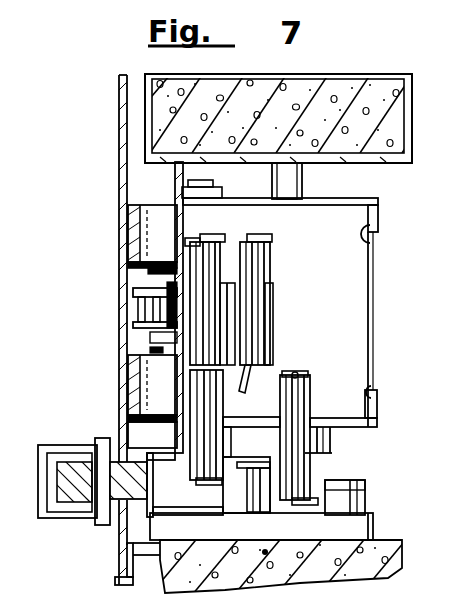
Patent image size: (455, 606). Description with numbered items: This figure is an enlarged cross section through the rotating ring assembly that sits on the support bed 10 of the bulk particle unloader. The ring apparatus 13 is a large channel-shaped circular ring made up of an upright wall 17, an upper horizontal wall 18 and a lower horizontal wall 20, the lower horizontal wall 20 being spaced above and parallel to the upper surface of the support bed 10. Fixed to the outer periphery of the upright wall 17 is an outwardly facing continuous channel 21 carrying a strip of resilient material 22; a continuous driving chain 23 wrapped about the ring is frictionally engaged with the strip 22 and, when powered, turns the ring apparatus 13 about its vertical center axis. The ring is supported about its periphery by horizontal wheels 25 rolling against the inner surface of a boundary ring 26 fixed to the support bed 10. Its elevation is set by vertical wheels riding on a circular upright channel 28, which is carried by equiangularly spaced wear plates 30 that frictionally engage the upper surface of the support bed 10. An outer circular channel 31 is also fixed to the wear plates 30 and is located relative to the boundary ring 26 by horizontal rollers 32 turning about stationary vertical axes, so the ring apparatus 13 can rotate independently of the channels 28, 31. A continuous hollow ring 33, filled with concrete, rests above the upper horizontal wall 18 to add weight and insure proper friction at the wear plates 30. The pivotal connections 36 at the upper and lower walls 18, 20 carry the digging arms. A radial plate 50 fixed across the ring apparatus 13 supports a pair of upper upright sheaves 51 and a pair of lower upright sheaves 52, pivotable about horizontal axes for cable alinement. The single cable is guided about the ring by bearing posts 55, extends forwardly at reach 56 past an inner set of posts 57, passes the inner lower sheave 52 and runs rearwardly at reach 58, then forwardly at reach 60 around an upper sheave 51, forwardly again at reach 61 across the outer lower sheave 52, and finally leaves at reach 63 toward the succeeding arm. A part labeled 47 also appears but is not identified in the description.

The support bed 10 is at (386, 540).
The ring apparatus 13 is at (380, 216).
The upright wall 17 is at (192, 238).
The upper horizontal wall 18 is at (345, 199).
The lower horizontal wall 20 is at (348, 422).
The continuous channel 21 is at (146, 271).
The strip of resilient material 22 is at (150, 349).
The driving chain 23 is at (160, 324).
The horizontal wheels 25 is at (155, 212).
The boundary ring 26 is at (117, 173).
The circular upright channel 28 is at (265, 511).
The wear plates 30 is at (361, 527).
The outer circular channel 31 is at (166, 514).
The horizontal rollers 32 is at (75, 495).
The continuous hollow ring 33 is at (409, 147).
The pivotal connection 36 is at (208, 184).
The hook 47 is at (372, 244).
The radial plate 50 is at (328, 323).
The upper upright sheaves 51 is at (216, 258).
The lower upright sheaves 52 is at (223, 408).
The bearing posts 55 is at (234, 500).
The forward cable reach 56 is at (309, 507).
The inner set of posts 57 is at (341, 492).
The rearward cable reach 58 is at (296, 373).
The forward cable reach 60 is at (273, 243).
The forward cable reach 61 is at (186, 242).
The final cable reach 63 is at (205, 485).